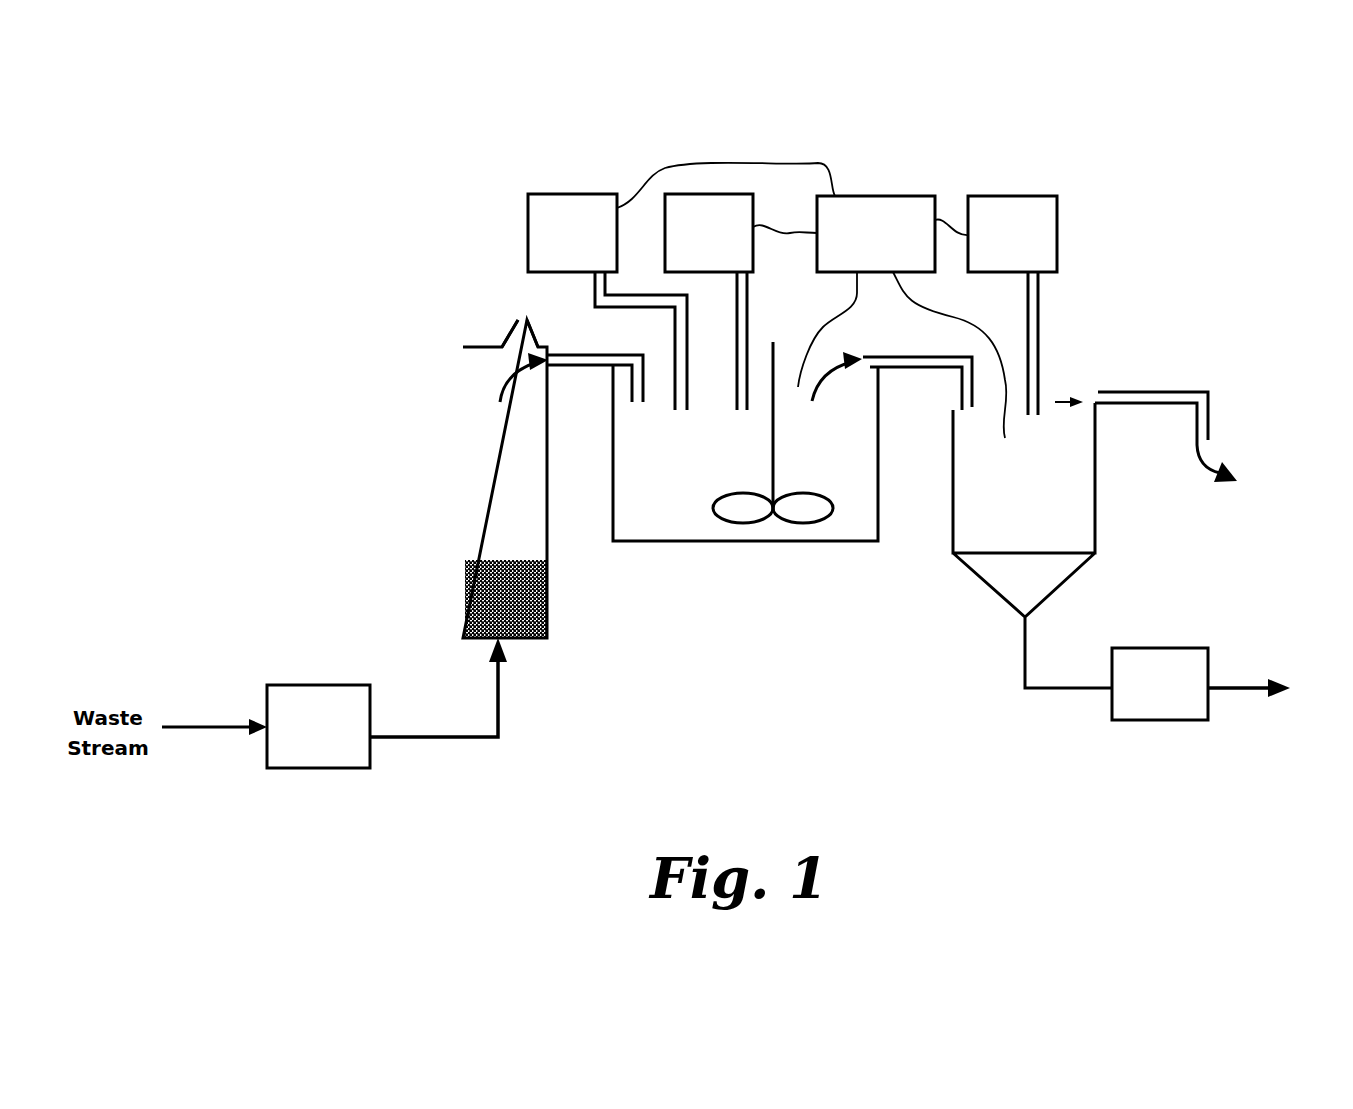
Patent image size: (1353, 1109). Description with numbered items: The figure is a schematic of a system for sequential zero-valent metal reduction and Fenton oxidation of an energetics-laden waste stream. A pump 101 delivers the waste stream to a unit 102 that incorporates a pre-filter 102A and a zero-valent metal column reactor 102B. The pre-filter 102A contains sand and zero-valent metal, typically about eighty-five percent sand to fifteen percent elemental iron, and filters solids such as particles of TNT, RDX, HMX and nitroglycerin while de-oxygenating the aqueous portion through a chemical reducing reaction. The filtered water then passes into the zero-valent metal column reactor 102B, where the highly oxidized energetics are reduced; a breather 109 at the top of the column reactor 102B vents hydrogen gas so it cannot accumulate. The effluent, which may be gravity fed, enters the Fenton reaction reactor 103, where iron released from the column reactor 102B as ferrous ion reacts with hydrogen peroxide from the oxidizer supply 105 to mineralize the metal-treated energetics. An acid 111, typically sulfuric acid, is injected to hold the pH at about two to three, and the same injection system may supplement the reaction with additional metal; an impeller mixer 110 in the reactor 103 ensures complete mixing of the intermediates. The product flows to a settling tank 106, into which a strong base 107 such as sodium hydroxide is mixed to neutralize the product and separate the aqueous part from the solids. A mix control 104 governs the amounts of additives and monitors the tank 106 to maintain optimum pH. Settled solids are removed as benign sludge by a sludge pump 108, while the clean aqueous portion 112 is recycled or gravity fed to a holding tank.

The pump 101 is at (295, 769).
The unit 102 is at (553, 479).
The pre-filter 102A is at (467, 597).
The zero-valent metal column reactor 102B is at (483, 447).
The Fenton reaction reactor 103 is at (792, 446).
The mix control 104 is at (875, 195).
The hydrogen peroxide supply 105 is at (578, 193).
The settling tank 106 is at (1032, 542).
The strong base 107 is at (1057, 213).
The sludge pump 108 is at (1210, 683).
The breather 109 is at (510, 323).
The impeller mixer 110 is at (765, 527).
The acid 111 is at (727, 193).
The aqueous portion 112 is at (1228, 469).